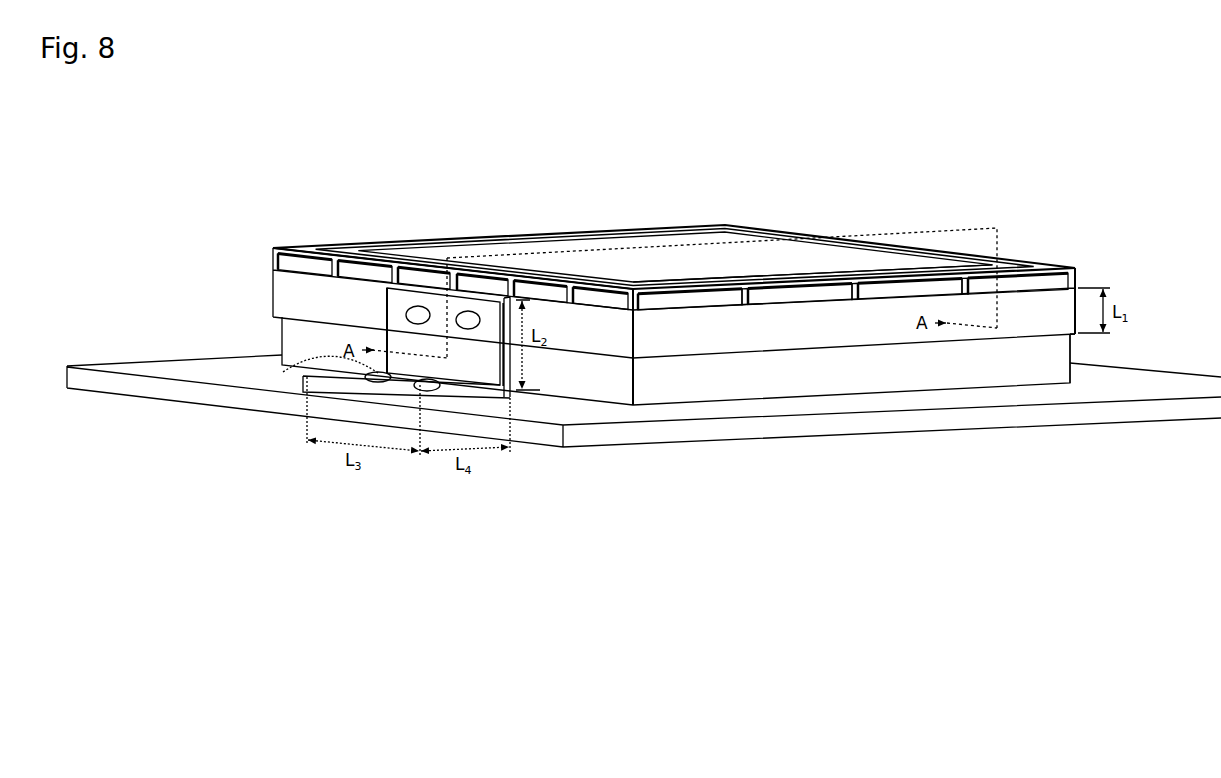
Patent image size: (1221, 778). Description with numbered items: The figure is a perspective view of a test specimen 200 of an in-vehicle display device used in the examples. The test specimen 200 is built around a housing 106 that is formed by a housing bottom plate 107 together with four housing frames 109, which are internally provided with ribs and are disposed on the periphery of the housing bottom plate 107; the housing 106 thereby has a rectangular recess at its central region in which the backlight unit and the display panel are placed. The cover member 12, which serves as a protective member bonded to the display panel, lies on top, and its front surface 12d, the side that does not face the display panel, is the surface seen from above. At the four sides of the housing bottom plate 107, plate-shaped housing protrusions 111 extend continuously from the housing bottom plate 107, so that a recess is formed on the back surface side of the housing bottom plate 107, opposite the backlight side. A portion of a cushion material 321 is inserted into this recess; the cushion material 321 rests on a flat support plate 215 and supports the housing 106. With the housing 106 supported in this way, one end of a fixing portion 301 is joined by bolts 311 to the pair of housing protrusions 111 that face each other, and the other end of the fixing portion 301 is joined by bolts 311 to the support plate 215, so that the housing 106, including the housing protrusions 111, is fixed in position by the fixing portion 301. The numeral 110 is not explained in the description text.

The cover member 12 is at (781, 262).
The front surface 12d is at (712, 262).
The housing 106 is at (266, 259).
The housing bottom plate 107 is at (696, 312).
The housing frames 109 is at (347, 273).
The frame rim 110 is at (292, 255).
The housing protrusions 111 is at (1020, 322).
The test specimen 200 is at (371, 228).
The support plate 215 is at (895, 425).
The fixing portion 301 is at (393, 318).
The bolts 311 is at (300, 363).
The cushion material 321 is at (698, 390).